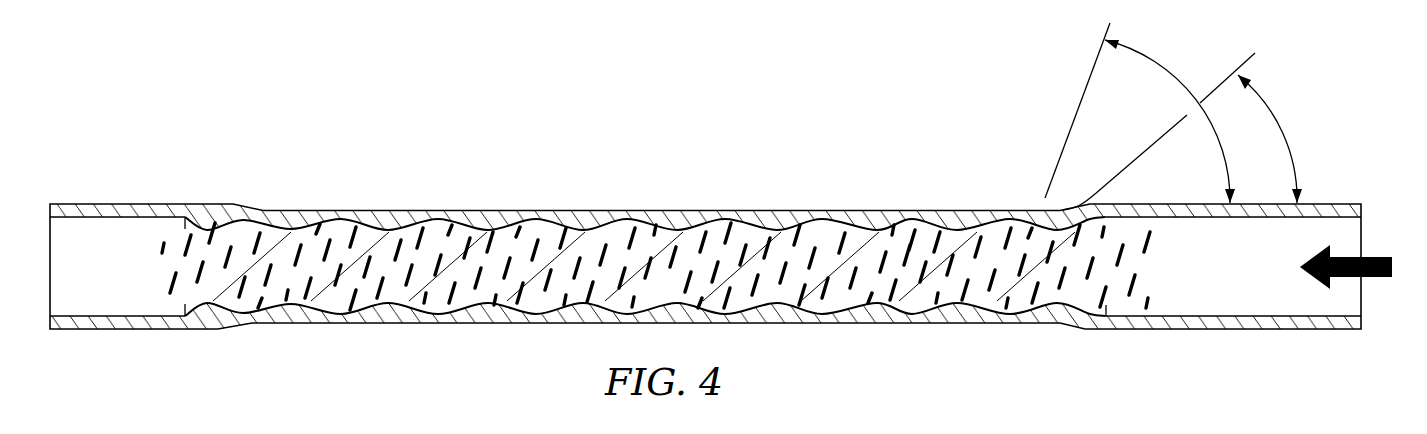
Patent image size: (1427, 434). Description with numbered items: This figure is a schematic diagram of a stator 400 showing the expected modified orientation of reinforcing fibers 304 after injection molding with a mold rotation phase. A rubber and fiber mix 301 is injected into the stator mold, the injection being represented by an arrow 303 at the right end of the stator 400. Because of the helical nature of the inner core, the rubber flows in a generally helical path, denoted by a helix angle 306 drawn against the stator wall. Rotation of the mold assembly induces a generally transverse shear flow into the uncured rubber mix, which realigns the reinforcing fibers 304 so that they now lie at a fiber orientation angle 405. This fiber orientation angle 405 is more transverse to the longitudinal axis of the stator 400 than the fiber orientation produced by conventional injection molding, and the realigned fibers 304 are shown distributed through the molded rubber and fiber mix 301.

The stator 400 is at (705, 193).
The rubber and fiber mix 301 is at (390, 210).
The reinforcing fibers 304 is at (160, 254).
The arrow 303 is at (1378, 257).
The fiber orientation angle 405 is at (1160, 68).
The helix angle 306 is at (1276, 121).